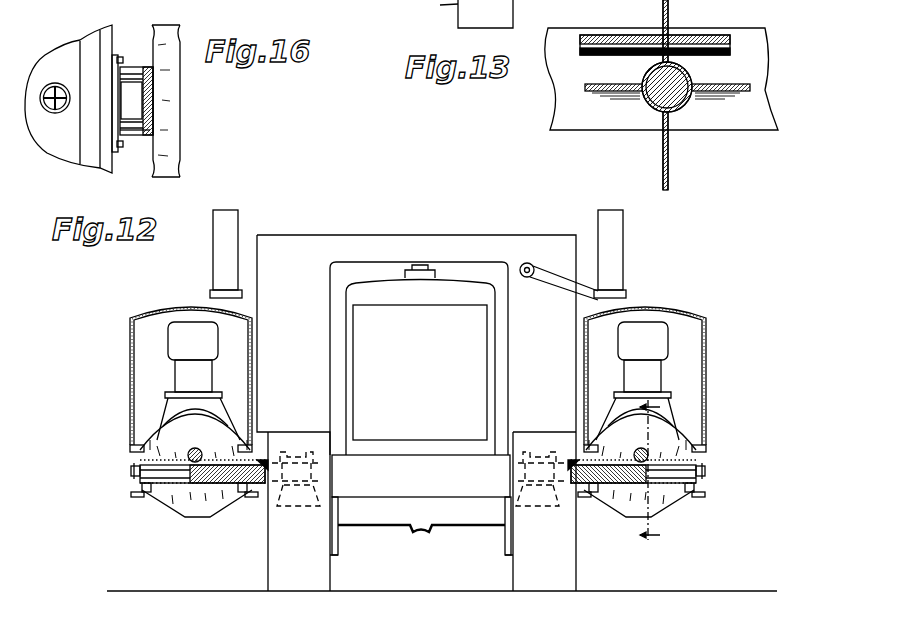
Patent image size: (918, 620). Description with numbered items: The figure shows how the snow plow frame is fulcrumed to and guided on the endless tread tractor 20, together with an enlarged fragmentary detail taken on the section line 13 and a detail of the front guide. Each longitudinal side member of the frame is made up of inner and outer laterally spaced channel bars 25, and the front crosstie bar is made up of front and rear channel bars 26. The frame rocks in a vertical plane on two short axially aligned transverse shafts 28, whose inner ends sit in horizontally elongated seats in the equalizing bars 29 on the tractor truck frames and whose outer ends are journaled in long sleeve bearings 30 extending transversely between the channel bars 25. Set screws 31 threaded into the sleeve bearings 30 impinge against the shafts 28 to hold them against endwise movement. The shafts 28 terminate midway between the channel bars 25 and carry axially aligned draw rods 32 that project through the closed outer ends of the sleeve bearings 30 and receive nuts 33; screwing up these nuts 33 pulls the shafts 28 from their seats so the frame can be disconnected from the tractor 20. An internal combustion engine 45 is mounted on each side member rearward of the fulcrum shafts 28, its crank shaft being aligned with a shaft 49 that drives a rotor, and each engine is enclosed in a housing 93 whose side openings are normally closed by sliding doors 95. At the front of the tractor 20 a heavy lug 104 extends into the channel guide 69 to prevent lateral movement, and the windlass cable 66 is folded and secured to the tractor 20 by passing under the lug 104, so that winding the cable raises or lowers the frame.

In FIG. 16, the endless tread tractor 20 is at (68, 99).
In FIG. 12, the endless tread tractor 20 is at (464, 408).
In FIG. 16, the channel bars of front crosstie bar 26 is at (167, 95).
In FIG. 16, the windlass cable 66 is at (129, 85).
In FIG. 16, the lug 104 is at (130, 114).
In FIG. 16, the channel guide 69 is at (146, 136).
In FIG. 13, the channel guide 69 is at (435, 6).
In FIG. 13, the channel bars of side members 25 is at (592, 125).
In FIG. 12, the channel bars of side members 25 is at (137, 497).
In FIG. 13, the transverse shafts 28 is at (658, 102).
In FIG. 12, the transverse shafts 28 is at (240, 496).
In FIG. 13, the shafts 49 is at (690, 40).
In FIG. 12, the shafts 49 is at (200, 455).
In FIG. 12, the housing 93 is at (142, 385).
In FIG. 12, the sliding doors 95 is at (130, 352).
In FIG. 12, the internal combustion engine 45 is at (418, 390).
In FIG. 12, the set screws 31 is at (262, 462).
In FIG. 12, the draw rods 32 is at (170, 478).
In FIG. 12, the nuts 33 is at (137, 472).
In FIG. 12, the sleeve bearings 30 is at (185, 485).
In FIG. 12, the equalizing bars 29 is at (298, 508).
In FIG. 12, the section line 13- 13 is at (651, 471).